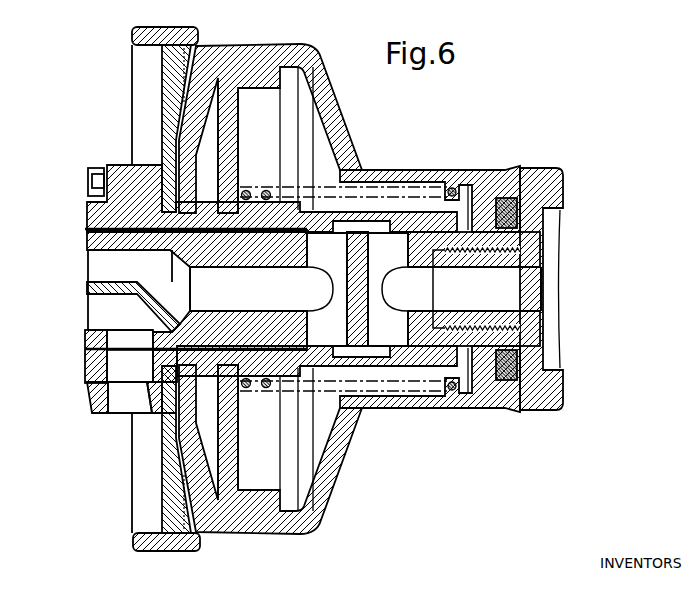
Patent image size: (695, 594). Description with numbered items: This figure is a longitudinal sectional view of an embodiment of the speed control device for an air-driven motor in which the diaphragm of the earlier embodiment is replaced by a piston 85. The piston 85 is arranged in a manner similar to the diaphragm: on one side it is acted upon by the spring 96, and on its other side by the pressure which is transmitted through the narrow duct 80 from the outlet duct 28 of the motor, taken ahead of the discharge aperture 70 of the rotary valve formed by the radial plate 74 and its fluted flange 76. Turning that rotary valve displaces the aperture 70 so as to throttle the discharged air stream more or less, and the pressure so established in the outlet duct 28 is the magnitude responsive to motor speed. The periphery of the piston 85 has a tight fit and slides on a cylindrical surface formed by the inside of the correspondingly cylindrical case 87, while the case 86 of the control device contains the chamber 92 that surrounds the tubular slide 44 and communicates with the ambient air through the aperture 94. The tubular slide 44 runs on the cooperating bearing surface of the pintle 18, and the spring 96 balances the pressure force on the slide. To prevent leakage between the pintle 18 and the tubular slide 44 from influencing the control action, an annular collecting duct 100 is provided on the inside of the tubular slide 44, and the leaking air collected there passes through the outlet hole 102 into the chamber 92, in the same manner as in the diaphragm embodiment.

The pintle 18 is at (252, 248).
The outlet duct 28 is at (105, 309).
The tubular slide 44 is at (282, 365).
The aperture 70 is at (113, 413).
The radial plate 74 is at (168, 478).
The fluted flange 76 is at (183, 552).
The narrow duct 80 is at (128, 398).
The piston 85 is at (237, 129).
The case 86 is at (338, 477).
The cylindrical case 87 is at (241, 56).
The chamber 92 is at (278, 439).
The aperture 94 is at (444, 405).
The spring 96 is at (418, 194).
The annular collecting duct 100 is at (260, 192).
The hole 102 is at (240, 385).